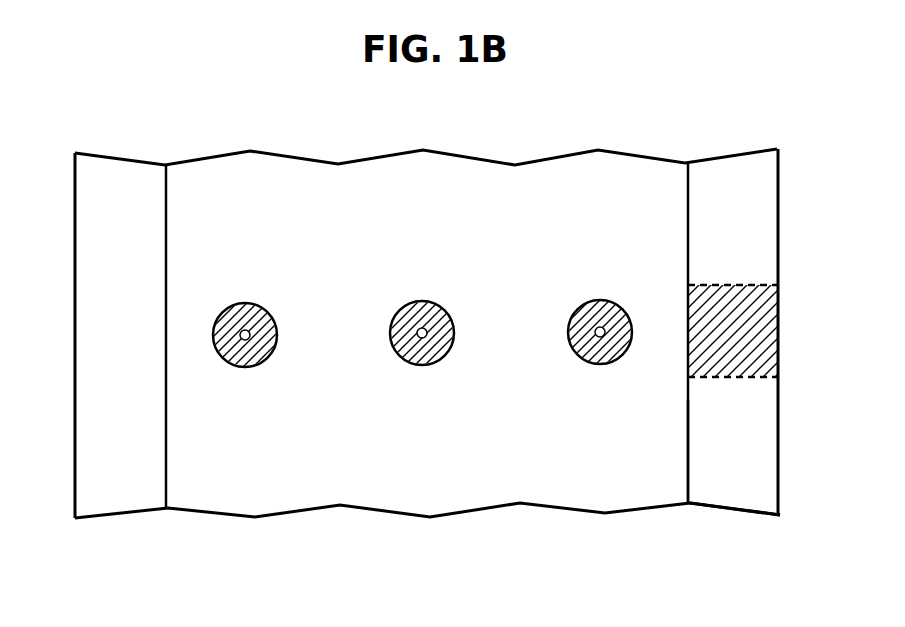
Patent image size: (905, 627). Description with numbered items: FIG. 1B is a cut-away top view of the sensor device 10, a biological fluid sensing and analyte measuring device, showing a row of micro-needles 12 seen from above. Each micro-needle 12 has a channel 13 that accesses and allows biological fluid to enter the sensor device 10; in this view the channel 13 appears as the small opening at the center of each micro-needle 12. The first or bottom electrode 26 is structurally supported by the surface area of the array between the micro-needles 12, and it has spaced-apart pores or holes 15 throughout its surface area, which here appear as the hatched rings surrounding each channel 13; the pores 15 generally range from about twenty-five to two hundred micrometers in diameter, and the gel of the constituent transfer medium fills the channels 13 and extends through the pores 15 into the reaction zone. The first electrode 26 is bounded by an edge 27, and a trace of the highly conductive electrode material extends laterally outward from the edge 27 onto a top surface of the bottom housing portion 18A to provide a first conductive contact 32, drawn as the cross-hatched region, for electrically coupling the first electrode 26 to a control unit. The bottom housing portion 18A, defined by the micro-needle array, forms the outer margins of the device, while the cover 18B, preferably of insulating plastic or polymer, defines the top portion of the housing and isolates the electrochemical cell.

The sensor device 10 is at (430, 293).
The micro-needle 12 is at (265, 360).
The channel 13 is at (240, 335).
The pores 15 is at (255, 306).
The bottom portion of housing 18A is at (97, 503).
The cover 18B is at (717, 480).
The first electrode 26 is at (204, 197).
The edge 27 is at (690, 432).
The first conductive contact 32 is at (760, 312).